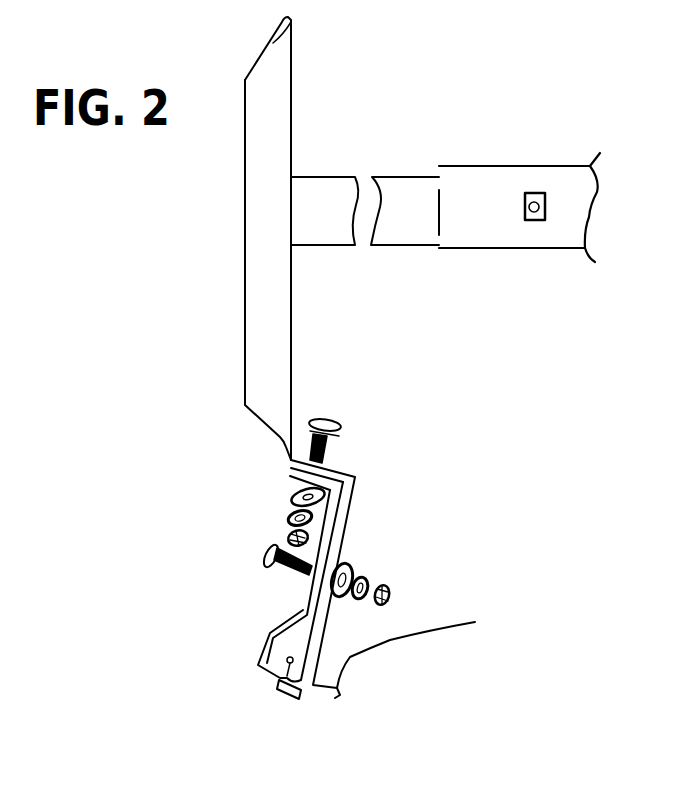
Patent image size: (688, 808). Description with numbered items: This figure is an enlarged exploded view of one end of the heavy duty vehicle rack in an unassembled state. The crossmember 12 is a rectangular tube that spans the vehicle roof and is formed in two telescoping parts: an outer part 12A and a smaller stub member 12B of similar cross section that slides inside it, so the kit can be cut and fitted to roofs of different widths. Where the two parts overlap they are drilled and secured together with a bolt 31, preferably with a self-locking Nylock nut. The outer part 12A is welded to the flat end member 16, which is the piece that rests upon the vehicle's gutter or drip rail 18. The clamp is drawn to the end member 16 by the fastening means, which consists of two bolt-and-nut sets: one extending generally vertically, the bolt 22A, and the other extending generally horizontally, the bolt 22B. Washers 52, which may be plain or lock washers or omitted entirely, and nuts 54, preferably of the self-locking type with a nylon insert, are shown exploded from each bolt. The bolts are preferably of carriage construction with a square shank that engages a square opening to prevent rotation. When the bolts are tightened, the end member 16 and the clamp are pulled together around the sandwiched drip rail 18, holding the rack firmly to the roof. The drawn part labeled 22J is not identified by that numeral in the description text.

The crossmember 12 is at (497, 166).
The outer part of crossmember 12A is at (327, 177).
The stub member (inner part of crossmember) 12B is at (518, 249).
The end member 16 is at (245, 250).
The drip rail 18 is at (323, 688).
The vertical bolt and nut set 22A is at (323, 420).
The horizontal bolt and nut set 22B is at (270, 565).
The mounting bracket 22J is at (280, 692).
The bolt 31 is at (543, 193).
The washers 52 is at (288, 518).
The nuts 54 is at (288, 537).